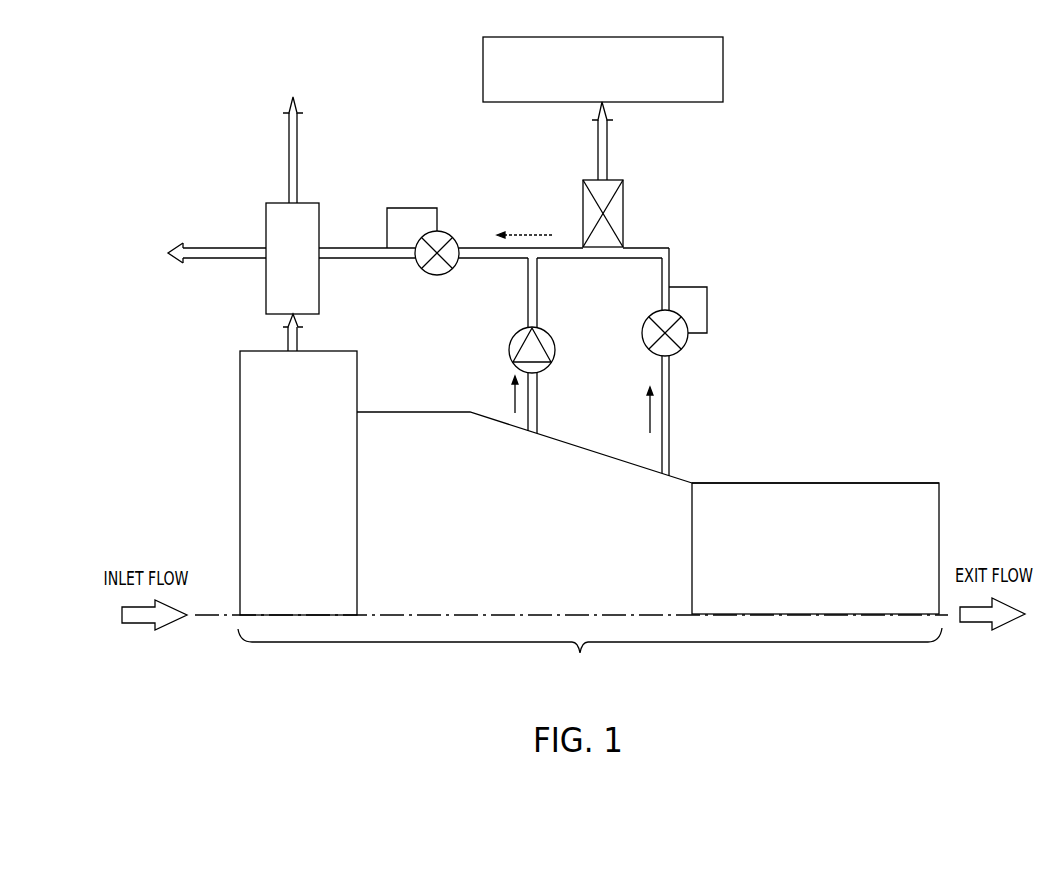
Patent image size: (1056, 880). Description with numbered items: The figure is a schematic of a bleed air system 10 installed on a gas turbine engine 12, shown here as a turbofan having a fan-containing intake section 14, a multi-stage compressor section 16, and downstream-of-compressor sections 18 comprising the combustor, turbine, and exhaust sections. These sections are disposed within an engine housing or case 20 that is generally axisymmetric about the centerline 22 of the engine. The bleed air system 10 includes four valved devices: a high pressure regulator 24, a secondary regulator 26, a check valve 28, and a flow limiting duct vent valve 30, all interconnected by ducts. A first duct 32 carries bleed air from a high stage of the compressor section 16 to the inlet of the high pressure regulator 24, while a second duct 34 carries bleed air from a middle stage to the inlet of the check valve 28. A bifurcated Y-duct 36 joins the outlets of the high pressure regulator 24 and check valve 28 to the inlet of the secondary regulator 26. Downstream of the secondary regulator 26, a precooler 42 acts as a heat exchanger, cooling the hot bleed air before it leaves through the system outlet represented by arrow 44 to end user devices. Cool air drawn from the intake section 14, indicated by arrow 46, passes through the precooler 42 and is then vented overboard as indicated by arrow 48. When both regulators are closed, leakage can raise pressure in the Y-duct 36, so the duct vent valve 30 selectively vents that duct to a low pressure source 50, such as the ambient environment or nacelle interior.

The bleed air system 10 is at (169, 81).
The gas turbine engine 12 is at (590, 656).
The intake section 14 is at (285, 559).
The multi-stage compressor section 16 is at (470, 573).
The downstream-of-compressor sections 18 is at (803, 601).
The engine housing 20 is at (790, 483).
The centerline 22 is at (592, 612).
The high pressure regulator 24 is at (703, 307).
The secondary regulator 26 is at (407, 210).
The check valve 28 is at (557, 347).
The flow limiting duct vent valve 30 is at (583, 218).
The first duct 32 is at (537, 410).
The second duct 34 is at (670, 418).
The Y-duct 36 is at (553, 258).
The precooler 42 is at (280, 264).
The outlet of the bleed air system 44 is at (230, 248).
The cooling airflow 46 is at (299, 342).
The overboard vent flow 48 is at (287, 160).
The low pressure source 50 is at (538, 102).